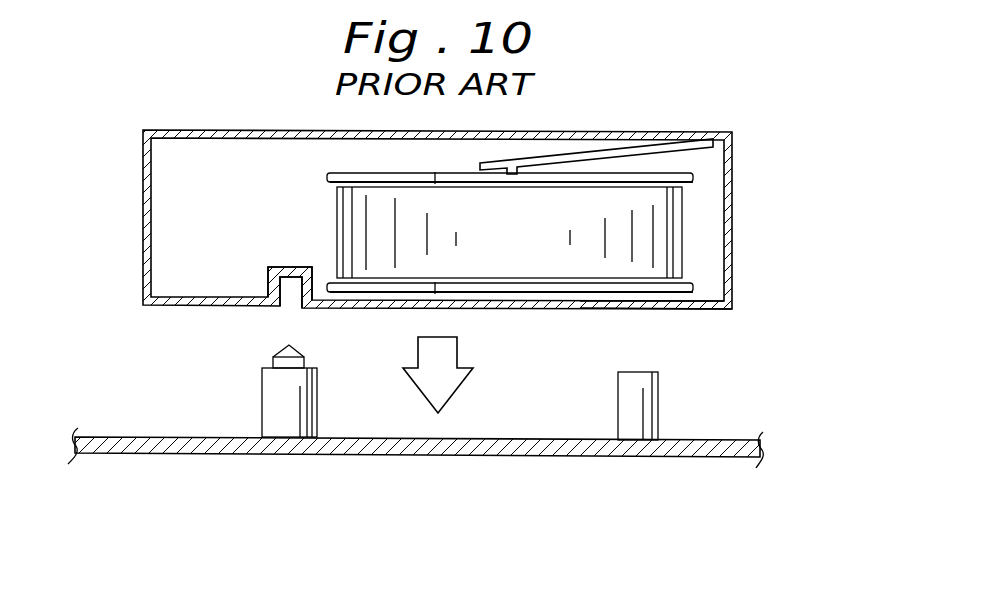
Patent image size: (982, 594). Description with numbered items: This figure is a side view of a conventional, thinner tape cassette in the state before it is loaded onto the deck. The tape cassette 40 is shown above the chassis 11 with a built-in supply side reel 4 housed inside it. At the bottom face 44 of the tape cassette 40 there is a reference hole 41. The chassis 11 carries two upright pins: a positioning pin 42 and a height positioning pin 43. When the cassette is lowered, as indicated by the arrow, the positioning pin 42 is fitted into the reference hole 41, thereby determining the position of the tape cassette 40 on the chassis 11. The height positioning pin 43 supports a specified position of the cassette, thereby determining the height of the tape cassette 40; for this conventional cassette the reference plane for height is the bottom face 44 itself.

The supply side reel 4 is at (697, 180).
The chassis 11 is at (485, 458).
The tape cassette 40 is at (732, 283).
The reference hole 41 is at (277, 267).
The positioning pin 42 is at (285, 400).
The height positioning pin 43 is at (636, 430).
The bottom face 44 is at (657, 310).